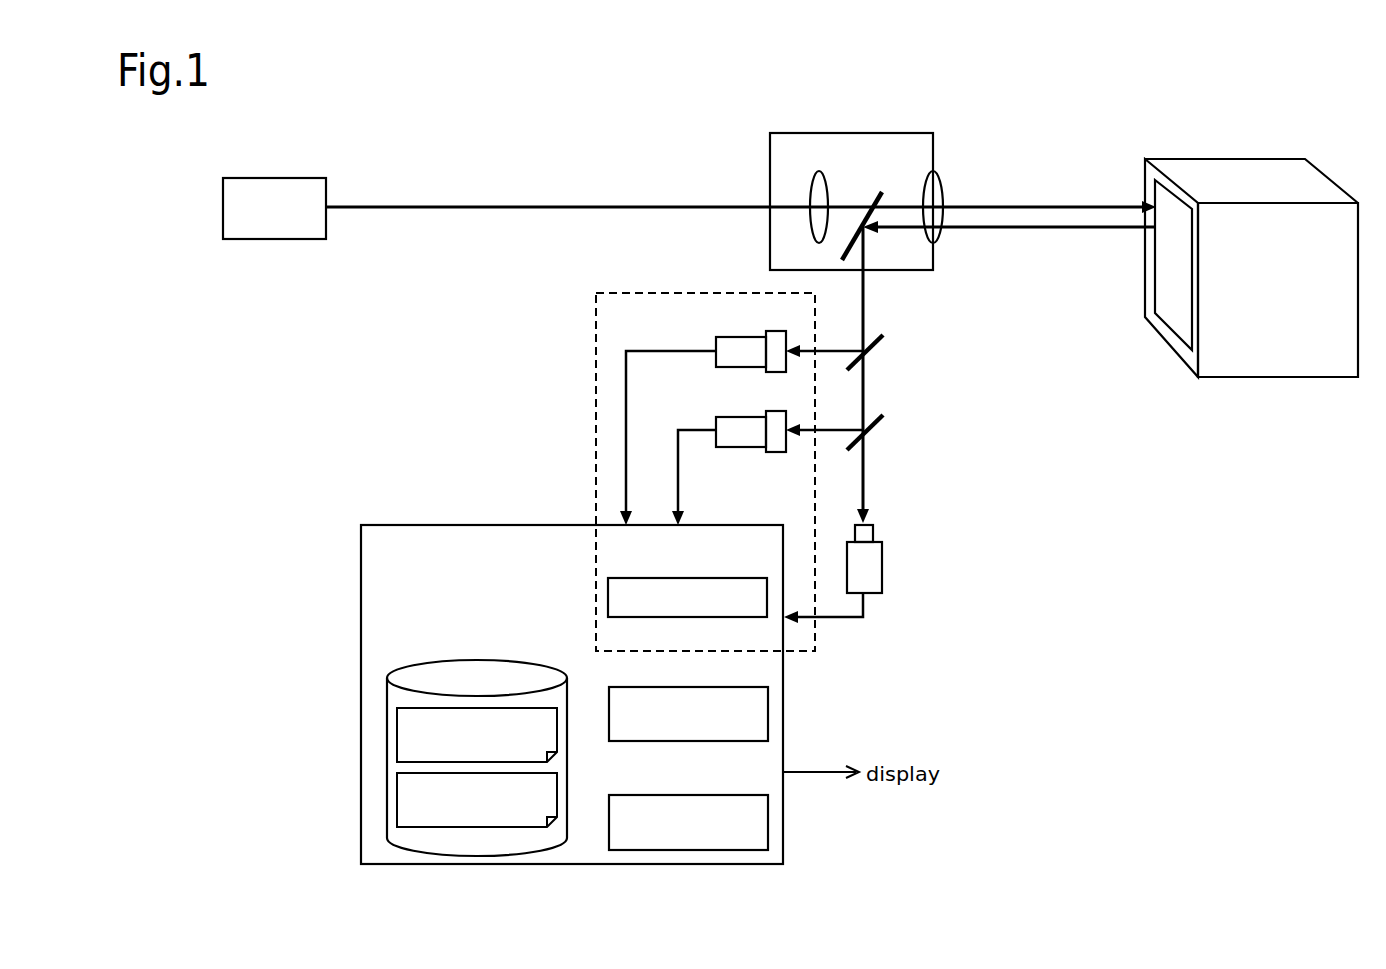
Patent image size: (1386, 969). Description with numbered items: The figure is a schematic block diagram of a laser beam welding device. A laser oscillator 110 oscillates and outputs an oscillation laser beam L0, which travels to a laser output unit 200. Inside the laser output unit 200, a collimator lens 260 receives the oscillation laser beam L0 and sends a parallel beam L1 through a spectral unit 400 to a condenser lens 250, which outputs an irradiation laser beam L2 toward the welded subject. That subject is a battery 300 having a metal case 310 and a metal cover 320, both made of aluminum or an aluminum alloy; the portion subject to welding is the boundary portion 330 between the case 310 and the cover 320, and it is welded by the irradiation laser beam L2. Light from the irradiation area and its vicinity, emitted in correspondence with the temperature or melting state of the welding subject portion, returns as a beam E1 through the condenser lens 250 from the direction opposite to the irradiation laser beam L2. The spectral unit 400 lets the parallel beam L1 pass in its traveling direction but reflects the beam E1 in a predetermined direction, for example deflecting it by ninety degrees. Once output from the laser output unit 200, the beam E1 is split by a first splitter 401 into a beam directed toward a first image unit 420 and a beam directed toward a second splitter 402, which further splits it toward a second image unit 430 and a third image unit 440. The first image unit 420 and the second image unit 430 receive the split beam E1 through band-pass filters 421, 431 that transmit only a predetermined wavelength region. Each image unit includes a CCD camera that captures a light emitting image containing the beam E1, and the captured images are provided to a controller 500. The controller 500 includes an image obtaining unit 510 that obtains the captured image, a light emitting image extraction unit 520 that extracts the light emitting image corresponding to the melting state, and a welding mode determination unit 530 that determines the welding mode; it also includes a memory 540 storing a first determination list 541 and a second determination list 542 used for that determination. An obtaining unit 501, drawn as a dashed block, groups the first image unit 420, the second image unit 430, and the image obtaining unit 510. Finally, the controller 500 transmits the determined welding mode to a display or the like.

The laser oscillator 110 is at (306, 178).
The oscillation laser beam L0 is at (362, 209).
The laser output unit 200 is at (925, 133).
The collimator lens 260 is at (825, 186).
The condenser lens 250 is at (944, 179).
The spectral unit 400 is at (843, 250).
The parallel beam L1 is at (847, 206).
The irradiation laser beam L2 is at (1053, 206).
The beam E1 is at (1054, 228).
The battery 300 is at (1218, 279).
The case 310 is at (1240, 355).
The cover 320 is at (1178, 323).
The boundary portion 330 is at (1150, 257).
The first splitter 401 is at (880, 354).
The second splitter 402 is at (880, 434).
The first image unit 420 is at (730, 337).
The band-pass filter 421 is at (776, 331).
The second image unit 430 is at (730, 417).
The band-pass filter 431 is at (776, 411).
The third image unit 440 is at (882, 559).
The controller 500 is at (398, 525).
The obtaining unit 501 is at (596, 335).
The image obtaining unit 510 is at (708, 578).
The light emitting image extraction unit 520 is at (708, 687).
The welding mode determination unit 530 is at (708, 795).
The memory 540 is at (495, 660).
The first determination list 541 is at (397, 731).
The second determination list 542 is at (397, 797).